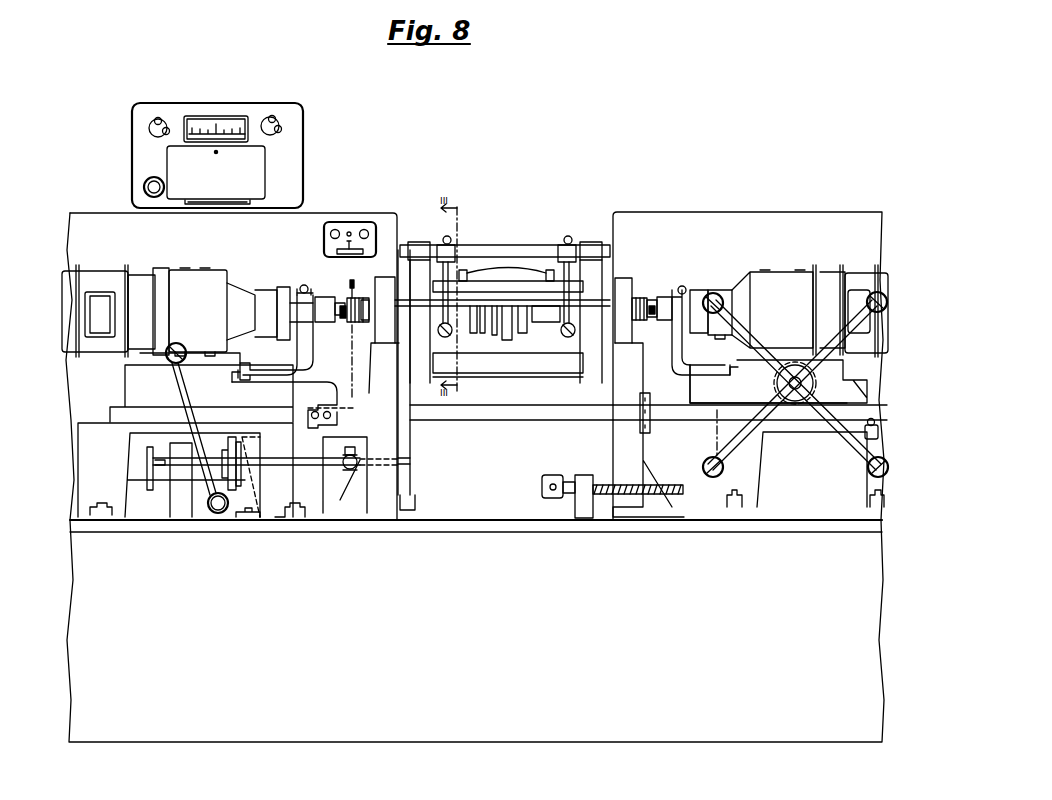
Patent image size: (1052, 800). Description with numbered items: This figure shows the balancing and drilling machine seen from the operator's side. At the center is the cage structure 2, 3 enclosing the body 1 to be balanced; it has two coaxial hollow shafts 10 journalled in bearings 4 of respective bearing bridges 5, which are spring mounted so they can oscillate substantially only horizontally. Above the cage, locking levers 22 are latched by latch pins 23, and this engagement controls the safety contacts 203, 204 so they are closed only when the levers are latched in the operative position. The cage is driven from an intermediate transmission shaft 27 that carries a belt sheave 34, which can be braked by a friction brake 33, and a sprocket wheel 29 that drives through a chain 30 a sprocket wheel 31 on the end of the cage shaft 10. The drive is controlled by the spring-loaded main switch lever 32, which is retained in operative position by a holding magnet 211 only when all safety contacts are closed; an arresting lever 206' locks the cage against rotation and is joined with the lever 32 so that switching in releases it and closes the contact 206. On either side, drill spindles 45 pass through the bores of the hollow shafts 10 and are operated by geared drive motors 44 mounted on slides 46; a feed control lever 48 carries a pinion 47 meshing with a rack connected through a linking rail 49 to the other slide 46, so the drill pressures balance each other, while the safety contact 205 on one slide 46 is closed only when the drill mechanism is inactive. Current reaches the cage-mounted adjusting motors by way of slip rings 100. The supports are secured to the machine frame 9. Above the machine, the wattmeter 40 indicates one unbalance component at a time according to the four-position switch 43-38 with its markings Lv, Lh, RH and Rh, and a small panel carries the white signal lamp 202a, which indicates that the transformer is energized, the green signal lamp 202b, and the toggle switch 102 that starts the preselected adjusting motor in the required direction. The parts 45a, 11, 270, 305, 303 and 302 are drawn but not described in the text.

The left-vertical switch marking Lv is at (159, 118).
The center-zero wattmeter 40 is at (221, 122).
The right-horizontal switch marking RH is at (283, 128).
The four-position switch 43-38 is at (146, 181).
The signal lamp 202a is at (336, 225).
The signal lamp 202b is at (366, 225).
The toggle switch 102 is at (328, 249).
The geared drive motor 44 is at (115, 275).
The slide 46 is at (133, 385).
The main switch lever 32 is at (194, 384).
The sprocket wheel 31 is at (351, 284).
The hollow shaft 10 is at (358, 300).
The coupling part 45a is at (344, 316).
The drill spindle 45 is at (347, 318).
The slip ring 100 is at (366, 322).
The bearing 4 is at (383, 278).
The bearing bridge 5 is at (377, 343).
The cage structure 2 is at (417, 246).
The locking lever 22 is at (453, 262).
The safety contact 203 is at (465, 270).
The safety contact 204 is at (550, 270).
The latch pin 23 is at (506, 268).
The cage structure 3 is at (512, 284).
The body 1 is at (511, 329).
The journal 11 is at (546, 320).
The left-horizontal switch marking Lh is at (455, 345).
The right-horizontal switch marking Rh is at (558, 348).
The chain 30 is at (293, 356).
The belt sheave 34 is at (234, 435).
The friction brake 33 is at (226, 452).
The bearing 270 is at (180, 443).
The holding magnet 211 is at (138, 470).
The intermediate transmission shaft 27 is at (305, 465).
The sprocket wheel 29 is at (348, 447).
The arresting lever 206' is at (419, 380).
The safety contact 206 is at (417, 462).
The linking rail 49 is at (511, 412).
The machine frame 9 is at (486, 528).
The block 305 is at (552, 476).
The block 303 is at (588, 476).
The threaded rod 302 is at (598, 494).
The pinion 47 is at (814, 384).
The feed control lever 48 is at (850, 447).
The safety contact 205 is at (874, 437).